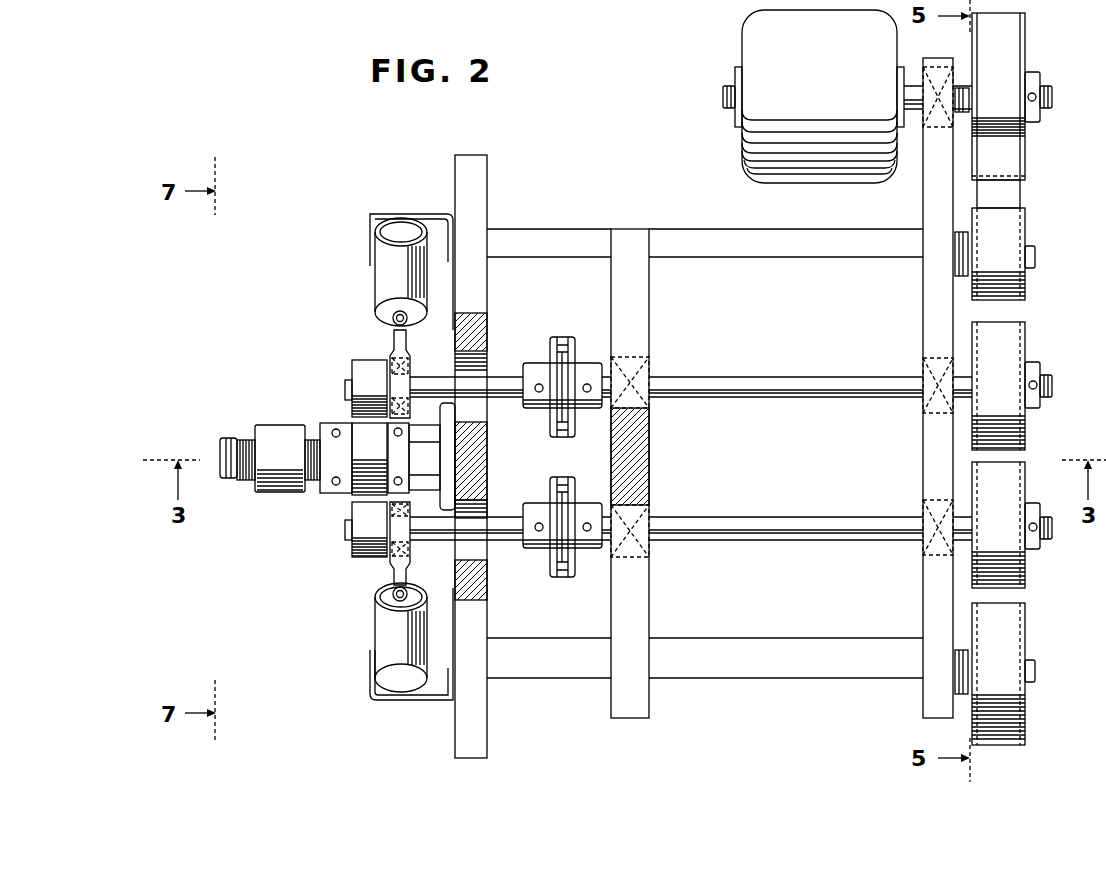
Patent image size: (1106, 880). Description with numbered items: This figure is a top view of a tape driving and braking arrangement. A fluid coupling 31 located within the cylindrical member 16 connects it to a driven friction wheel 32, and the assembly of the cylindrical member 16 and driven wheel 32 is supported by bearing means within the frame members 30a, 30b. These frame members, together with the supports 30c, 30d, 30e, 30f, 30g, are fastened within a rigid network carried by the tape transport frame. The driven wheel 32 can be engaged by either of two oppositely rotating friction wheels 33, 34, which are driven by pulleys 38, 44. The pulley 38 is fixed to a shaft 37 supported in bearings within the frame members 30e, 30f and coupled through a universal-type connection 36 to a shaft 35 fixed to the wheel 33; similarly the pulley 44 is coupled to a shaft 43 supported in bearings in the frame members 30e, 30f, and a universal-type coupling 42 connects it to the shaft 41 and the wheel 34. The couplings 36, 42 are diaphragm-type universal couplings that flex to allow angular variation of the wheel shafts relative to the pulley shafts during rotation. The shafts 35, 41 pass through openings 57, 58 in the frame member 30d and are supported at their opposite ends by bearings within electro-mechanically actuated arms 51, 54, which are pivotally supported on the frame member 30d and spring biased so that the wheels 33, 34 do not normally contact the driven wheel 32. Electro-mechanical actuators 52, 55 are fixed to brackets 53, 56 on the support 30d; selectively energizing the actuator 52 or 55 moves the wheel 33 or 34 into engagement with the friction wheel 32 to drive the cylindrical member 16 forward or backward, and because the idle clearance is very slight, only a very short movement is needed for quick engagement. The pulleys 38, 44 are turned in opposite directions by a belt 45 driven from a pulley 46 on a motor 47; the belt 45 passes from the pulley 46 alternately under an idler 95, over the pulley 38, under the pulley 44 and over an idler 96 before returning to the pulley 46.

The cylindrical member 16 is at (265, 493).
The frame member 30a is at (322, 425).
The frame member 30b is at (390, 431).
The support 30c is at (745, 233).
The frame member 30d is at (480, 185).
The frame member 30e is at (925, 212).
The frame member 30f is at (643, 327).
The support 30g is at (818, 676).
The fluid coupling 31 is at (242, 438).
The driven friction wheel 32 is at (353, 496).
The friction wheel 33 is at (360, 367).
The friction wheel 34 is at (353, 548).
The shaft 35 is at (495, 378).
The universal-type connection 36 is at (563, 328).
The shaft 37 is at (745, 380).
The pulley 38 is at (1025, 342).
The shaft 41 is at (492, 527).
The universal-type coupling 42 is at (562, 592).
The shaft 43 is at (787, 525).
The pulley 44 is at (1025, 563).
The belt 45 is at (1013, 198).
The pulley 46 is at (1025, 156).
The motor 47 is at (745, 38).
The electro-mechanically actuated arm 51 is at (394, 350).
The electro-mechanical actuator 52 is at (380, 273).
The bracket 53 is at (422, 213).
The electro-mechanically actuated arm 54 is at (397, 562).
The electro-mechanical actuator 55 is at (382, 633).
The bracket 56 is at (437, 699).
The opening 57 is at (480, 418).
The opening 58 is at (478, 503).
The idler 95 is at (1013, 233).
The idler 96 is at (1028, 703).